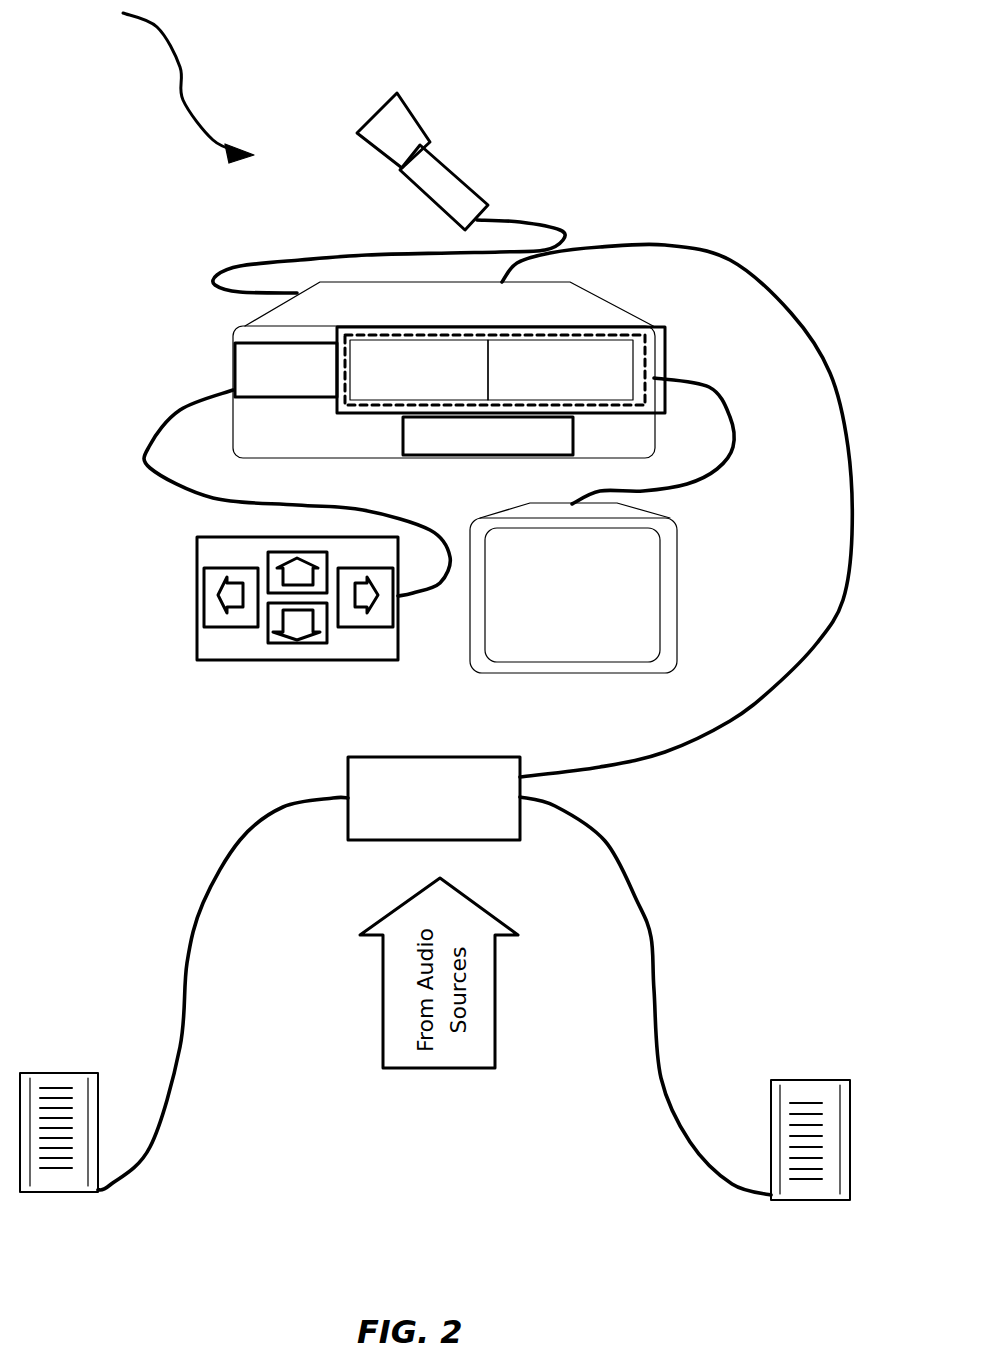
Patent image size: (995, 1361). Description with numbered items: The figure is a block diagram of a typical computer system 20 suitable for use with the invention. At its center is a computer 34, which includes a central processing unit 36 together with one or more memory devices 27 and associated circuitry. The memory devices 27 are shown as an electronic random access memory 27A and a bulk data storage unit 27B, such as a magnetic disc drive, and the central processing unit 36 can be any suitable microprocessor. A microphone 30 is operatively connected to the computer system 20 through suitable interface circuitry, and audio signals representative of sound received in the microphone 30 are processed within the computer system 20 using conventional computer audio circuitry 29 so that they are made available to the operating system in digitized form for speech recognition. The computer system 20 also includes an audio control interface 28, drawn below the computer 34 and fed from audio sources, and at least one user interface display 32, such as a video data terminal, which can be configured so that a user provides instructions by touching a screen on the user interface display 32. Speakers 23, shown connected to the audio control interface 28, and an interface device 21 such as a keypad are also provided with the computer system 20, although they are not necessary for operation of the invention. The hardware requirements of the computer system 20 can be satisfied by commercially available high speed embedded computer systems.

The computer system 20 is at (172, 82).
The interface device 21 is at (197, 658).
The speakers 23 is at (50, 1075).
The memory devices 27 is at (482, 332).
The electronic random access memory 27A is at (353, 374).
The bulk data storage unit 27B is at (635, 347).
The audio control interface 28 is at (497, 828).
The computer audio circuitry 29 is at (272, 362).
The microphone 30 is at (463, 177).
The user interface display 32 is at (585, 597).
The computer 34 is at (255, 322).
The central processing unit 36 is at (543, 435).